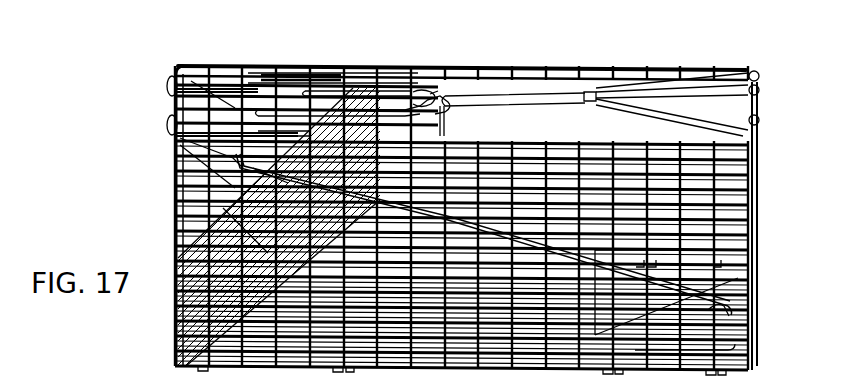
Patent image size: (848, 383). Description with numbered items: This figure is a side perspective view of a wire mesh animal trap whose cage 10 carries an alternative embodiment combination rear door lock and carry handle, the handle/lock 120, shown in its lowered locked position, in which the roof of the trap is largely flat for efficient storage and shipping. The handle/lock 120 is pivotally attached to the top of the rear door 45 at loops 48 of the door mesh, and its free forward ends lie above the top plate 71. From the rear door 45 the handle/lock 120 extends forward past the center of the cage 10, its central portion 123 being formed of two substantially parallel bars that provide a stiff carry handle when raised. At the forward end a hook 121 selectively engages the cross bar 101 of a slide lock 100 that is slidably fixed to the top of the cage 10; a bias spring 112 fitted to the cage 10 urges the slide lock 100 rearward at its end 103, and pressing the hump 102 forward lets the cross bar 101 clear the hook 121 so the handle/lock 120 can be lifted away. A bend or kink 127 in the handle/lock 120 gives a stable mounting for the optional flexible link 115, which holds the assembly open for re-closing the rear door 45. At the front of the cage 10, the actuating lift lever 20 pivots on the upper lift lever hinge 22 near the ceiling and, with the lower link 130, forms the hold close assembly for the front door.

The cage 10 is at (182, 215).
The actuating lift lever 20 is at (170, 190).
The upper lift lever hinge 22 is at (160, 115).
The rear door 45 is at (757, 200).
The loops of the door mesh 48 is at (752, 68).
The top plate 71 is at (705, 108).
The slide lock 100 is at (388, 95).
The cross bar 101 is at (440, 78).
The hump 102 is at (417, 84).
The end of slide lock 103 is at (301, 108).
The bias spring 112 is at (299, 98).
The flexible link 115 is at (673, 86).
The handle/lock 120 is at (742, 94).
The hook 121 is at (437, 128).
The central portion 123 is at (508, 92).
The bend or kink 127 is at (577, 84).
The lower link 130 is at (205, 233).